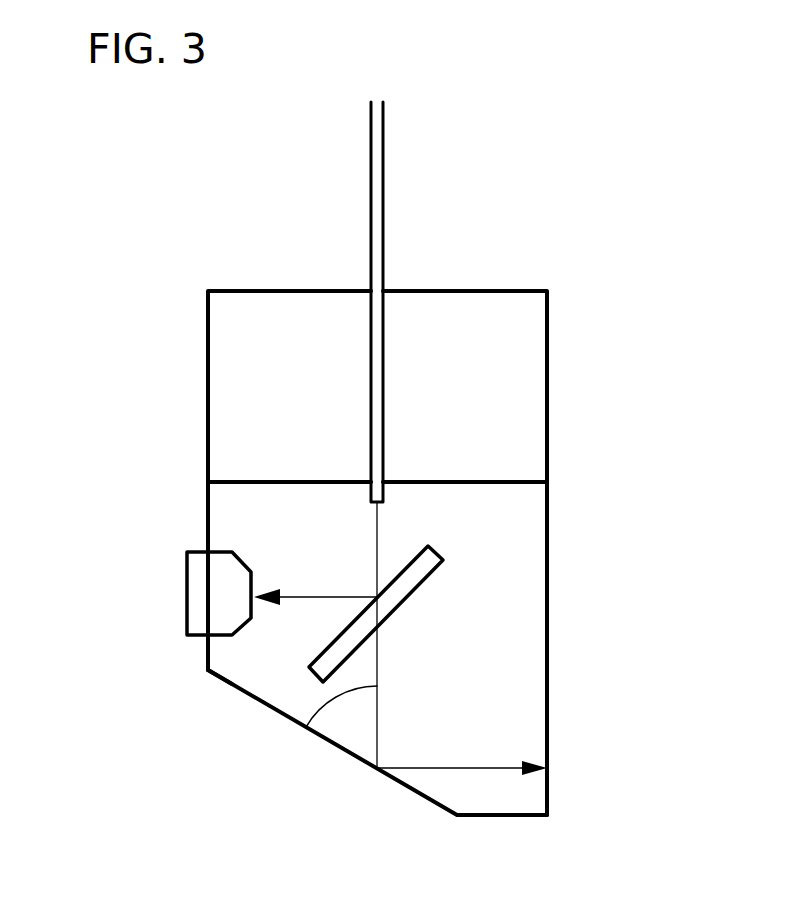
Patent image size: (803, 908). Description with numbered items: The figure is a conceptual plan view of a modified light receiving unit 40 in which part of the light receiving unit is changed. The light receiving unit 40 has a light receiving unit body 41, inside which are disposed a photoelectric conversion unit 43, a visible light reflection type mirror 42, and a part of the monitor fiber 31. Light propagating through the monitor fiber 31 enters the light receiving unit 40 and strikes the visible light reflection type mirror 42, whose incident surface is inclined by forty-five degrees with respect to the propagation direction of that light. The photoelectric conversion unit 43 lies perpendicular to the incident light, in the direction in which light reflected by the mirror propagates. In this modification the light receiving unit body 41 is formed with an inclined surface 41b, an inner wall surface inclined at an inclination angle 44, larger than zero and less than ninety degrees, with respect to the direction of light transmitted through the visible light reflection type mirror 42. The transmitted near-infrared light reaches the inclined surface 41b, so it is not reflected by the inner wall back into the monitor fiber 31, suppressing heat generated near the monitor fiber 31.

The light receiving unit 40 is at (547, 165).
The monitor fiber 31 is at (383, 233).
The light receiving unit body 41 is at (400, 780).
The inclined surface 41b is at (233, 688).
The visible light reflection type mirror 42 is at (443, 562).
The photoelectric conversion unit 43 is at (187, 588).
The inclination angle 44 is at (322, 716).